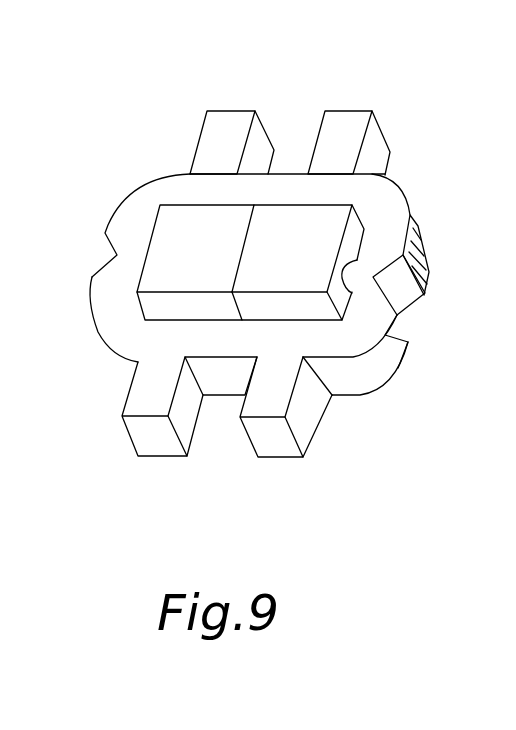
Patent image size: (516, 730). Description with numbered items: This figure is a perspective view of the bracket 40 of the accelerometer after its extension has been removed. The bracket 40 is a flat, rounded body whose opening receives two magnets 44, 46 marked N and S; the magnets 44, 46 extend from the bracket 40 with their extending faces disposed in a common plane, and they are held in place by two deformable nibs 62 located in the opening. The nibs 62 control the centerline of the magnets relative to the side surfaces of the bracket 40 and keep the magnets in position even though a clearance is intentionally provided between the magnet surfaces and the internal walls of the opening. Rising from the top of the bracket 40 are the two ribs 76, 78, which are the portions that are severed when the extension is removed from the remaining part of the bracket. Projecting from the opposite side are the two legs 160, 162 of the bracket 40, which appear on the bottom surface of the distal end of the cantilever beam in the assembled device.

The bracket 40 is at (388, 205).
The magnet 44 is at (165, 278).
The magnet 46 is at (330, 252).
The nib 62 is at (352, 293).
The rib 76 is at (342, 127).
The rib 78 is at (225, 118).
The leg 160 is at (153, 437).
The leg 162 is at (268, 440).